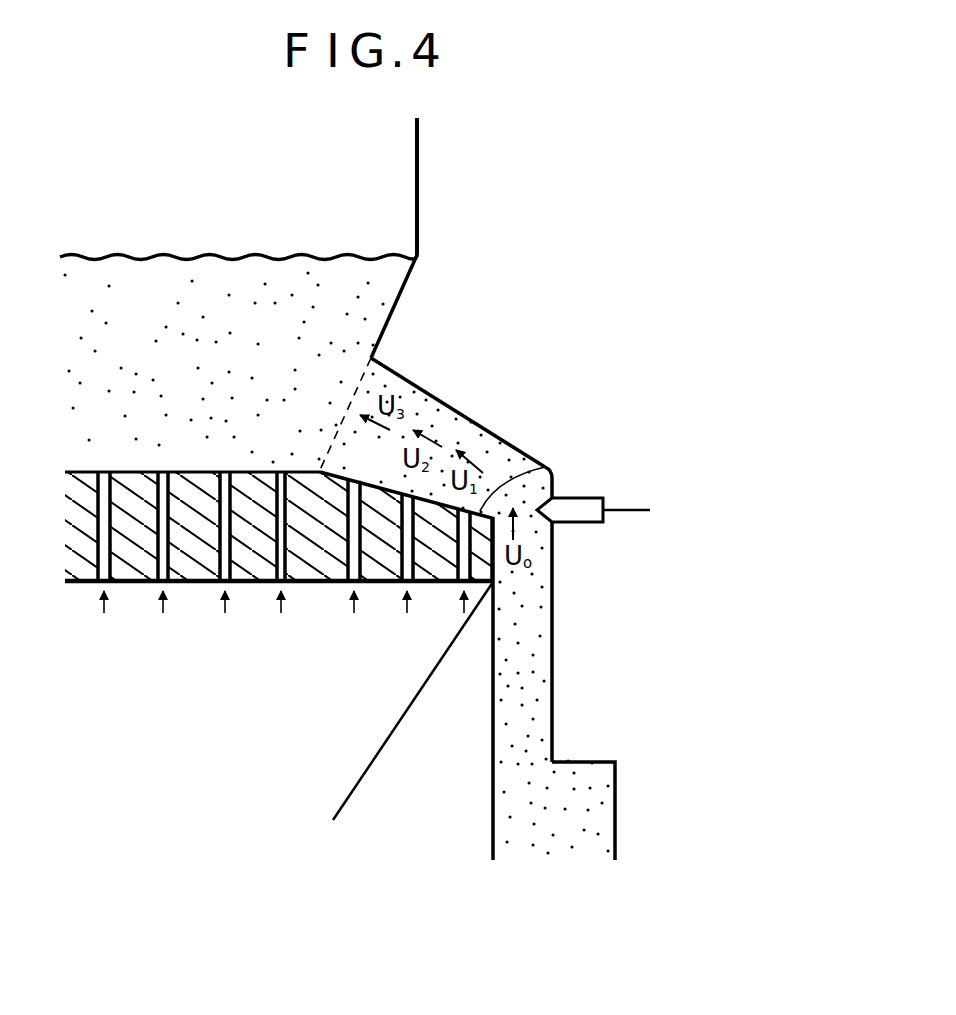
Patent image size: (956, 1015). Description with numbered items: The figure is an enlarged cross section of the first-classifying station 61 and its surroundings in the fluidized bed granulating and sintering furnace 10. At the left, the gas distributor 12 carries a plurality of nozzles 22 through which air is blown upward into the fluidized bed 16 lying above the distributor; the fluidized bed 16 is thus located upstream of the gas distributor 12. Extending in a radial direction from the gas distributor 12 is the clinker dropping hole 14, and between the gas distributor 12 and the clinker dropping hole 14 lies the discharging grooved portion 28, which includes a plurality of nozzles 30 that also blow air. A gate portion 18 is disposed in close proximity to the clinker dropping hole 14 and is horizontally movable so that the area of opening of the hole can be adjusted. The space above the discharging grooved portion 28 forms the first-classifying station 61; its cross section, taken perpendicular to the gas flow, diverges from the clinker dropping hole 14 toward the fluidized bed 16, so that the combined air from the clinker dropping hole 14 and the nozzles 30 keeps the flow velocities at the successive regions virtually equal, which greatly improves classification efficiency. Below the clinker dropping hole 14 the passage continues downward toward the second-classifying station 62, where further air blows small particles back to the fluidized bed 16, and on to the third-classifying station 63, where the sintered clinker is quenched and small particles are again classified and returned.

The fluidized bed granulating and sintering furnace 10 is at (417, 182).
The fluidized bed 16 is at (266, 287).
The first-classifying station 61 is at (452, 432).
The discharging grooved portion 28 is at (546, 466).
The gate portion 18 is at (578, 497).
The clinker dropping hole 14 is at (531, 521).
The second-classifying station 62 is at (530, 655).
The third-classifying station 63 is at (615, 800).
The gas distributor 12 is at (133, 535).
The nozzles 22 is at (217, 537).
The nozzles 30 is at (450, 555).